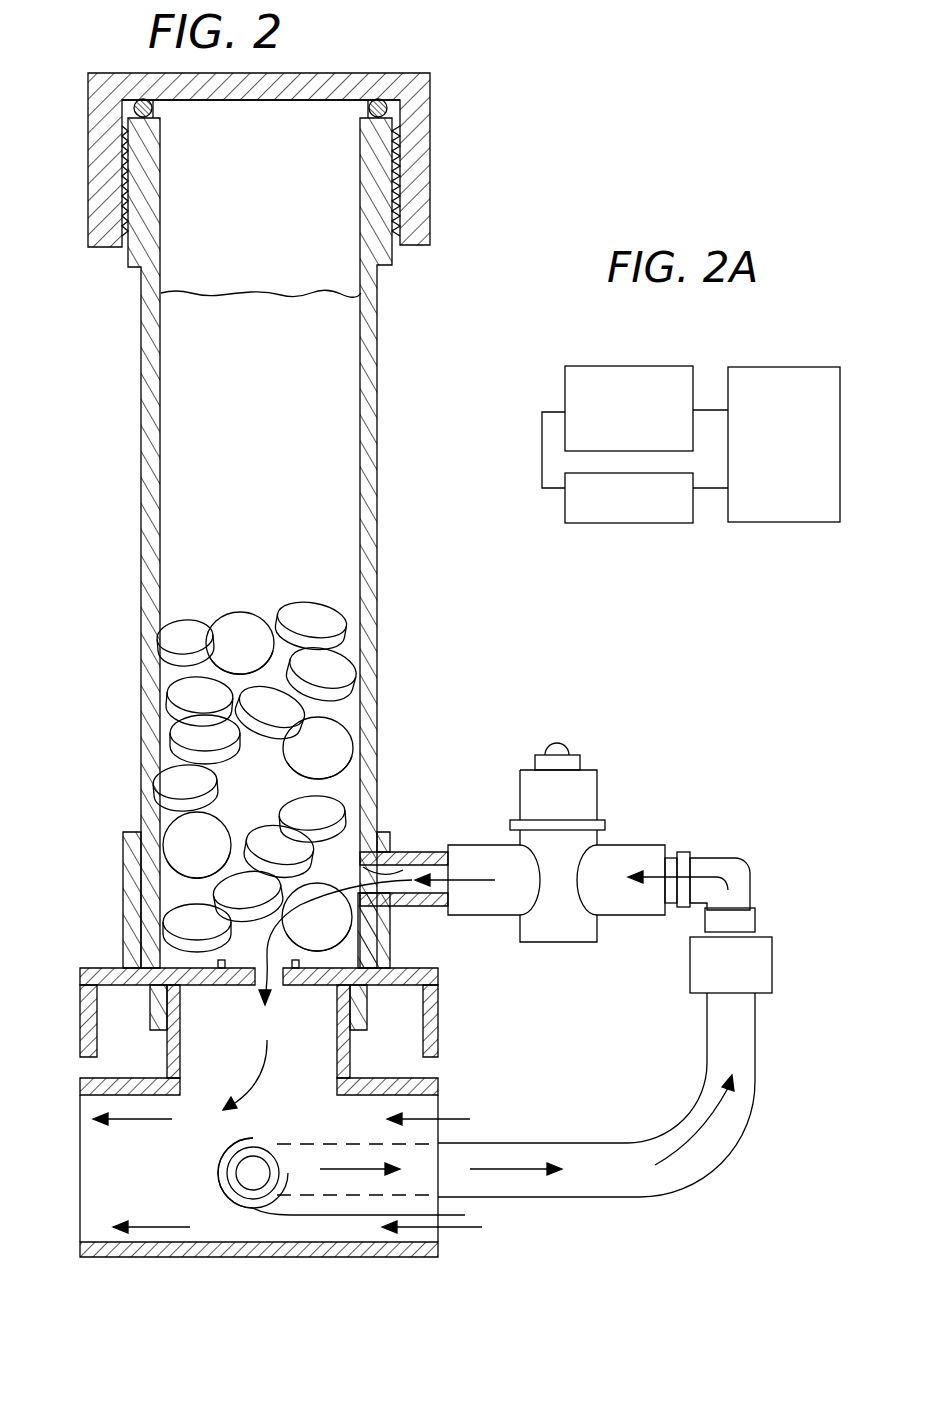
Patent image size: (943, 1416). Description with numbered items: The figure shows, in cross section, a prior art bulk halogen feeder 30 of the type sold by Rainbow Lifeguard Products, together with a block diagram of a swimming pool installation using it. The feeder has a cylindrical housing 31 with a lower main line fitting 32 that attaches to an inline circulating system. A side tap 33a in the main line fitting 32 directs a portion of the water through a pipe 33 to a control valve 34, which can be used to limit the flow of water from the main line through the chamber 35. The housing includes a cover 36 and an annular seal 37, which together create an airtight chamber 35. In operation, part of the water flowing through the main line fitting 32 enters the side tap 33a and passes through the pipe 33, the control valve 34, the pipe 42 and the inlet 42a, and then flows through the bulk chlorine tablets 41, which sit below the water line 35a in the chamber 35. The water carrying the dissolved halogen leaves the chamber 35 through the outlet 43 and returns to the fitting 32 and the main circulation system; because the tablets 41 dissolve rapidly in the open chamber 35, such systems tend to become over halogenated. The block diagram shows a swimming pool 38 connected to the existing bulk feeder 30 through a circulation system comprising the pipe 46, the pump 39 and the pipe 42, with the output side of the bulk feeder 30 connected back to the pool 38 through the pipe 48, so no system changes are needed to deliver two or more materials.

In FIG. 2, the bulk halogen feeder 30 is at (283, 161).
In FIG. 2A, the bulk halogen feeder 30 is at (612, 366).
In FIG. 2, the cylindrical housing 31 is at (378, 407).
In FIG. 2, the lower main line fitting 32 is at (440, 1078).
In FIG. 2, the pipe 33 is at (582, 1143).
In FIG. 2, the side tap 33a is at (258, 1176).
In FIG. 2, the control valve 34 is at (597, 773).
In FIG. 2, the chamber 35 is at (279, 393).
In FIG. 2, the water line 35a is at (297, 290).
In FIG. 2, the cover 36 is at (100, 162).
In FIG. 2, the annular seal 37 is at (136, 105).
In FIG. 2A, the swimming pool 38 is at (760, 367).
In FIG. 2A, the pump 39 is at (612, 523).
In FIG. 2, the bulk chlorine tablets 41 is at (238, 643).
In FIG. 2, the pipe 42 is at (408, 852).
In FIG. 2A, the pipe 42 is at (542, 432).
In FIG. 2, the inlet 42a is at (422, 853).
In FIG. 2, the outlet 43 is at (255, 973).
In FIG. 2A, the pipe 46 is at (710, 488).
In FIG. 2A, the pipe 48 is at (710, 410).